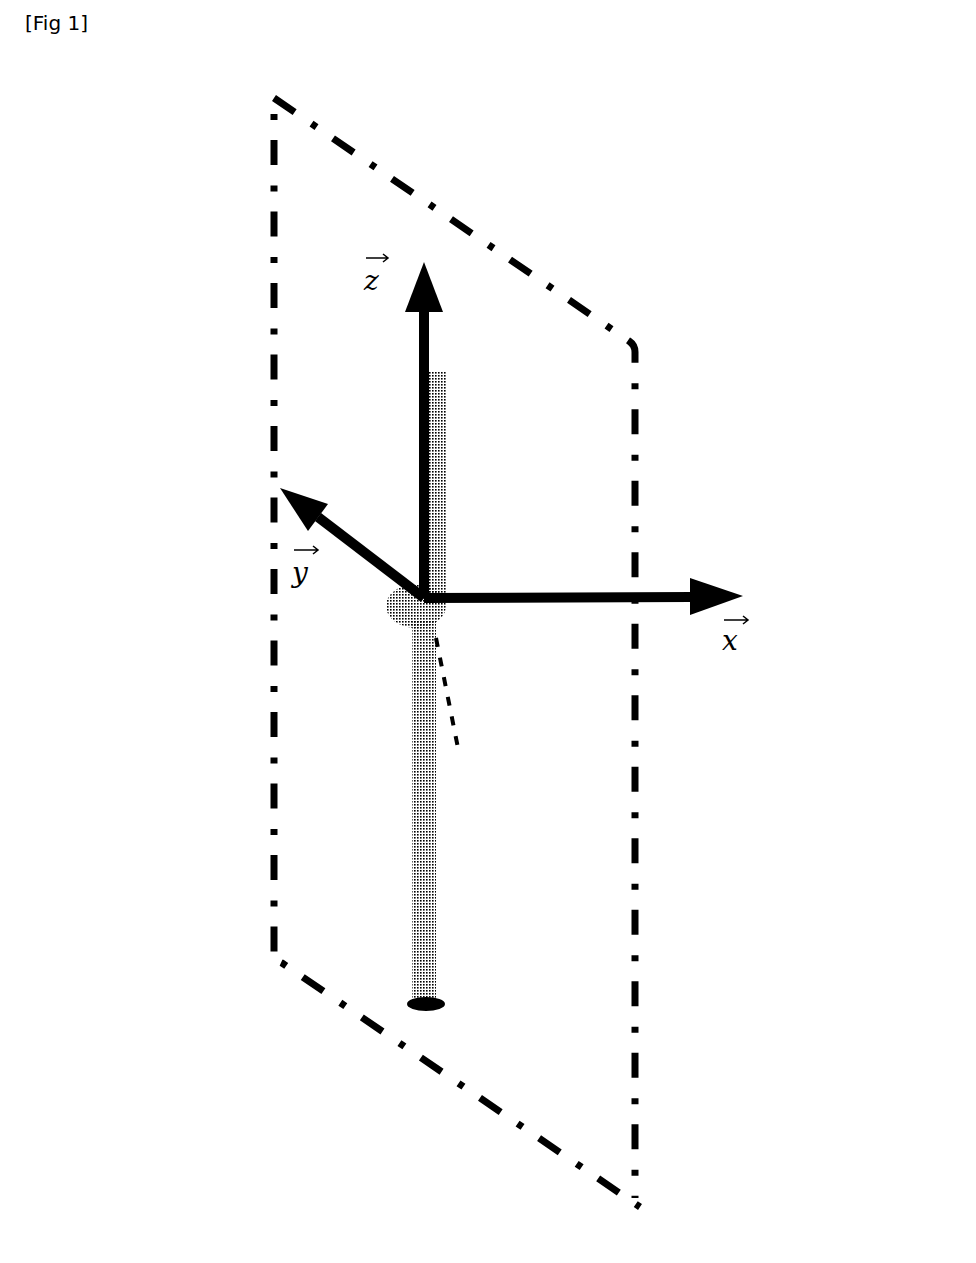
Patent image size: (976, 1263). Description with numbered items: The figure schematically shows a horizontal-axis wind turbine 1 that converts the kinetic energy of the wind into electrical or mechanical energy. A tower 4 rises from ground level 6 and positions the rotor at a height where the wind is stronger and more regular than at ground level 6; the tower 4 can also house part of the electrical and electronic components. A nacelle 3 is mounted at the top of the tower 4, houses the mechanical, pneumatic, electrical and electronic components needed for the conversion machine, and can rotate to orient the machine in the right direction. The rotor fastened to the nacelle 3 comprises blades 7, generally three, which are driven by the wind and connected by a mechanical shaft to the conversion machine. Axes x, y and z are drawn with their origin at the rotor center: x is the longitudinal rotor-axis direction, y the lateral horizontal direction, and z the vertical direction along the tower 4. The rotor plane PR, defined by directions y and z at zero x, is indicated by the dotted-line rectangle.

The wind turbine 1 is at (491, 347).
The nacelle 3 is at (425, 636).
The tower 4 is at (434, 846).
The ground level 6 is at (438, 1005).
The blades 7 is at (475, 732).
The rotor plane PR is at (307, 992).